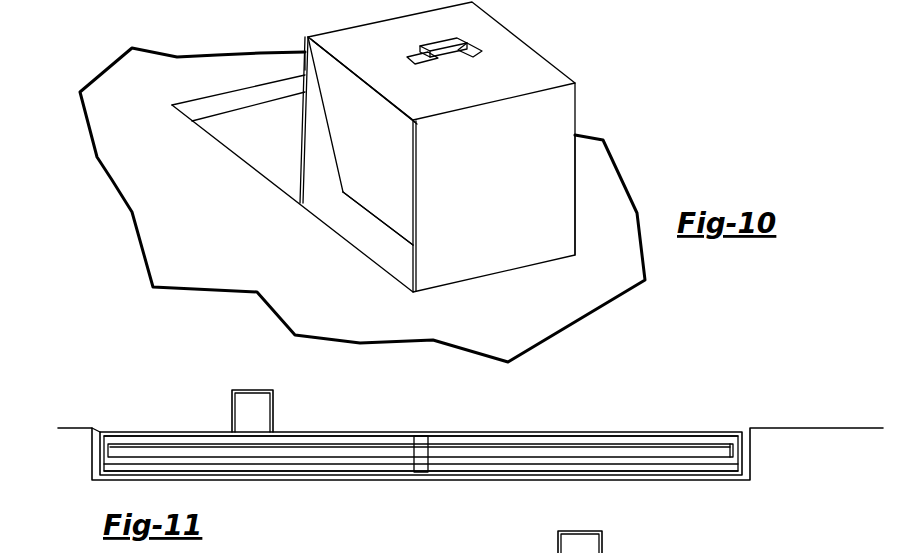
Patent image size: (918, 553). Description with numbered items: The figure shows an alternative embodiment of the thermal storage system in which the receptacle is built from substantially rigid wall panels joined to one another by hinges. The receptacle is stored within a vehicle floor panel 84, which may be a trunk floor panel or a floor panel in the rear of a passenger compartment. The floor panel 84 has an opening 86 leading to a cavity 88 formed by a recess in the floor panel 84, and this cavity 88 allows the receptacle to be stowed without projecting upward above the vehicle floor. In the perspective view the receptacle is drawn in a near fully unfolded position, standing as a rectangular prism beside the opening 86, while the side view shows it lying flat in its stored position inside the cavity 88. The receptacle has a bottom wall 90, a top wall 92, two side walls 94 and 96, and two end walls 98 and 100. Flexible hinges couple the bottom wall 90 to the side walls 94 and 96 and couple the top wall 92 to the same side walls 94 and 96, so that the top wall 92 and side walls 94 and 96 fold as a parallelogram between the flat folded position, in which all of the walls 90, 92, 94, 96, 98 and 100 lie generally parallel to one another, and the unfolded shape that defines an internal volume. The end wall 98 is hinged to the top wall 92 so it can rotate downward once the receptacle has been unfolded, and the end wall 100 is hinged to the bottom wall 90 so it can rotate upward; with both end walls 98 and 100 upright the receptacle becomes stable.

In FIG. 10, the floor panel 84 is at (203, 213).
In FIG. 11, the floor panel 84 is at (73, 427).
In FIG. 10, the opening 86 is at (213, 95).
In FIG. 11, the opening 86 is at (92, 427).
In FIG. 10, the cavity 88 is at (252, 128).
In FIG. 11, the bottom wall 90 is at (632, 470).
In FIG. 10, the top wall 92 is at (503, 65).
In FIG. 11, the top wall 92 is at (385, 432).
In FIG. 10, the side wall 94 is at (537, 182).
In FIG. 11, the side wall 94 is at (627, 440).
In FIG. 10, the side wall 96 is at (307, 58).
In FIG. 11, the side wall 96 is at (360, 467).
In FIG. 10, the end wall 98 is at (382, 157).
In FIG. 11, the end wall 98 is at (257, 450).
In FIG. 11, the end wall 100 is at (708, 453).